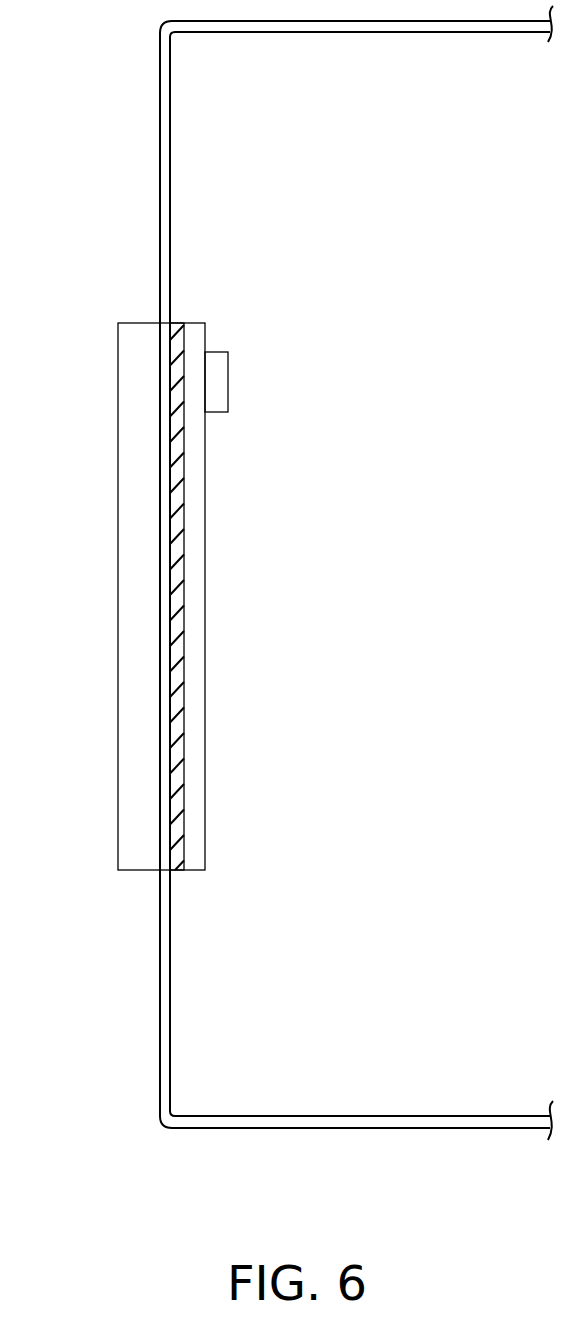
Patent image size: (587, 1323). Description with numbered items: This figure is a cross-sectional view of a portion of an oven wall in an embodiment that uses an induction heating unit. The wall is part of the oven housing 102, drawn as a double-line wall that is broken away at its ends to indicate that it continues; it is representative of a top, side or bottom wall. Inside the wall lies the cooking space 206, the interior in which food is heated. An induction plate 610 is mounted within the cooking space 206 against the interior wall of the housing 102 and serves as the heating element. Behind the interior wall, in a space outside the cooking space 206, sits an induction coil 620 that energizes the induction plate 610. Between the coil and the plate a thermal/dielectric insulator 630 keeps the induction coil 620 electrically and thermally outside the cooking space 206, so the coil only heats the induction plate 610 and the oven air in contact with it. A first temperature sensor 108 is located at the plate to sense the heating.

The housing 102 is at (268, 1121).
The first temperature sensor 108 is at (218, 380).
The cooking space 206 is at (293, 968).
The induction plate 610 is at (198, 833).
The induction coil 620 is at (137, 600).
The thermal/dielectric insulator 630 is at (175, 740).